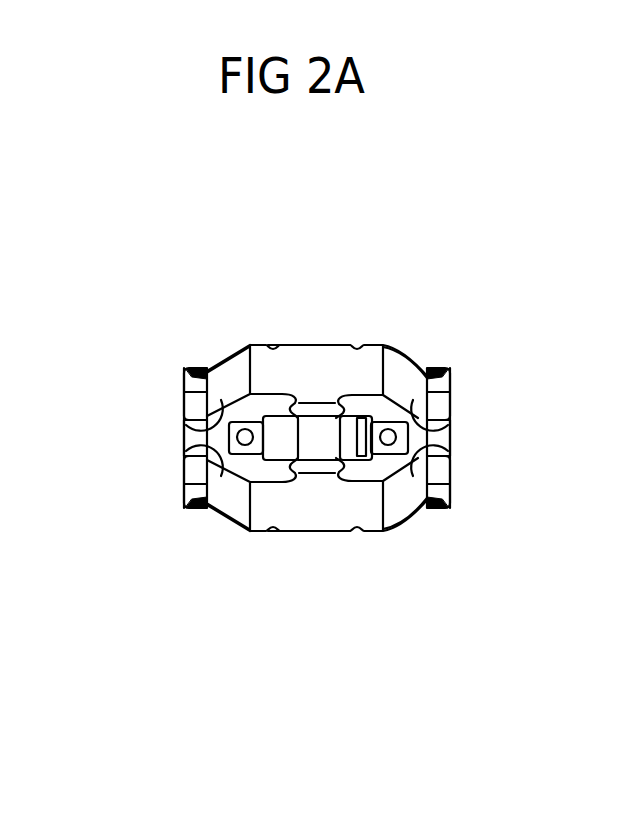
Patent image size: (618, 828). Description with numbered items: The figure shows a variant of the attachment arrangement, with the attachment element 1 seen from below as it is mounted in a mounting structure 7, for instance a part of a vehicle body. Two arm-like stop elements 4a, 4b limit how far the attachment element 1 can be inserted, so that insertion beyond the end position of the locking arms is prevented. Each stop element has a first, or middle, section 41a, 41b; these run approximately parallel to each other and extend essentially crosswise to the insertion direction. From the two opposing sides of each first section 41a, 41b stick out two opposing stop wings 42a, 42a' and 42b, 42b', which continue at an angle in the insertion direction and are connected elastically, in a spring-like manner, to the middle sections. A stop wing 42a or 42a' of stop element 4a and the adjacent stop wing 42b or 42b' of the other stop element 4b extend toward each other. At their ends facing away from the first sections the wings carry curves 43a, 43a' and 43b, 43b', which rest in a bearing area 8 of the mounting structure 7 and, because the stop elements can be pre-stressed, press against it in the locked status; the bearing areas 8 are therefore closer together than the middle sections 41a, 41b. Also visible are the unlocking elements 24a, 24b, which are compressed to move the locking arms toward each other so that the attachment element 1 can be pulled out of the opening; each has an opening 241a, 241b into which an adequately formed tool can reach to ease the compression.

The attachment element 1 is at (407, 345).
The stop element 4a is at (335, 350).
The stop element 4b is at (323, 527).
The first section 41a is at (298, 350).
The first section 41b is at (292, 527).
The stop wing 42a is at (431, 341).
The stop wing 42a' is at (216, 342).
The stop wing 42b is at (418, 542).
The stop wing 42b' is at (219, 546).
The curve 43a is at (469, 399).
The curve 43a' is at (163, 398).
The curve 43b is at (469, 486).
The curve 43b' is at (173, 491).
The mounting structure 7 is at (396, 438).
The bearing area 8 is at (192, 372).
The unlocking element 24a is at (410, 448).
The unlocking element 24b is at (229, 434).
The opening 241a is at (449, 432).
The opening 241b is at (231, 440).